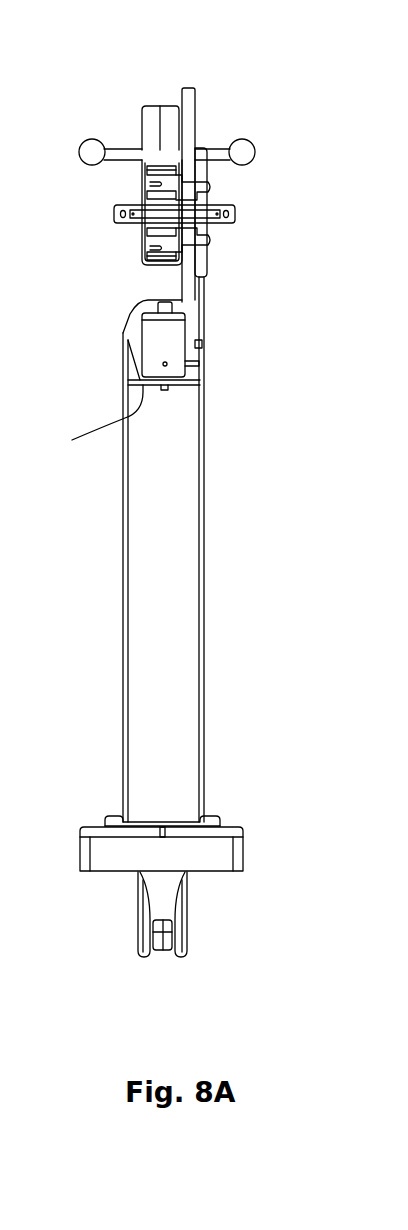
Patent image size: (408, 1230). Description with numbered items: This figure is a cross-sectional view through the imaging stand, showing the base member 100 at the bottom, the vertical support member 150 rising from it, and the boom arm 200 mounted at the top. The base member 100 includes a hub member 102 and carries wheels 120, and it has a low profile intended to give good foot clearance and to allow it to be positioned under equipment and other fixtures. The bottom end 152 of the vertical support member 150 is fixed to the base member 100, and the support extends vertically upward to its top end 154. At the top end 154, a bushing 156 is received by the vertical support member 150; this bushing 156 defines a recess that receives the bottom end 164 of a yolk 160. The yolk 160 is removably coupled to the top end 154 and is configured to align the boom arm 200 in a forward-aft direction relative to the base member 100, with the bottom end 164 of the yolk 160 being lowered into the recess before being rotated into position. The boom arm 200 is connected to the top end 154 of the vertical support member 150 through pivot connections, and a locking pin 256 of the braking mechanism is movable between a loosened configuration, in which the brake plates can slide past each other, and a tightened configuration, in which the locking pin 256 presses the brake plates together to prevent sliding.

The base member 100 is at (222, 874).
The hub member 102 is at (243, 840).
The wheels 120 is at (190, 948).
The vertical support member 150 is at (206, 526).
The bottom end 152 is at (200, 815).
The top end 154 is at (203, 363).
The bushing 156 is at (85, 425).
The yolk 160 is at (207, 288).
The bottom end of yolk 164 is at (190, 347).
The boom arm 200 is at (150, 100).
The locking pin 256 is at (212, 215).